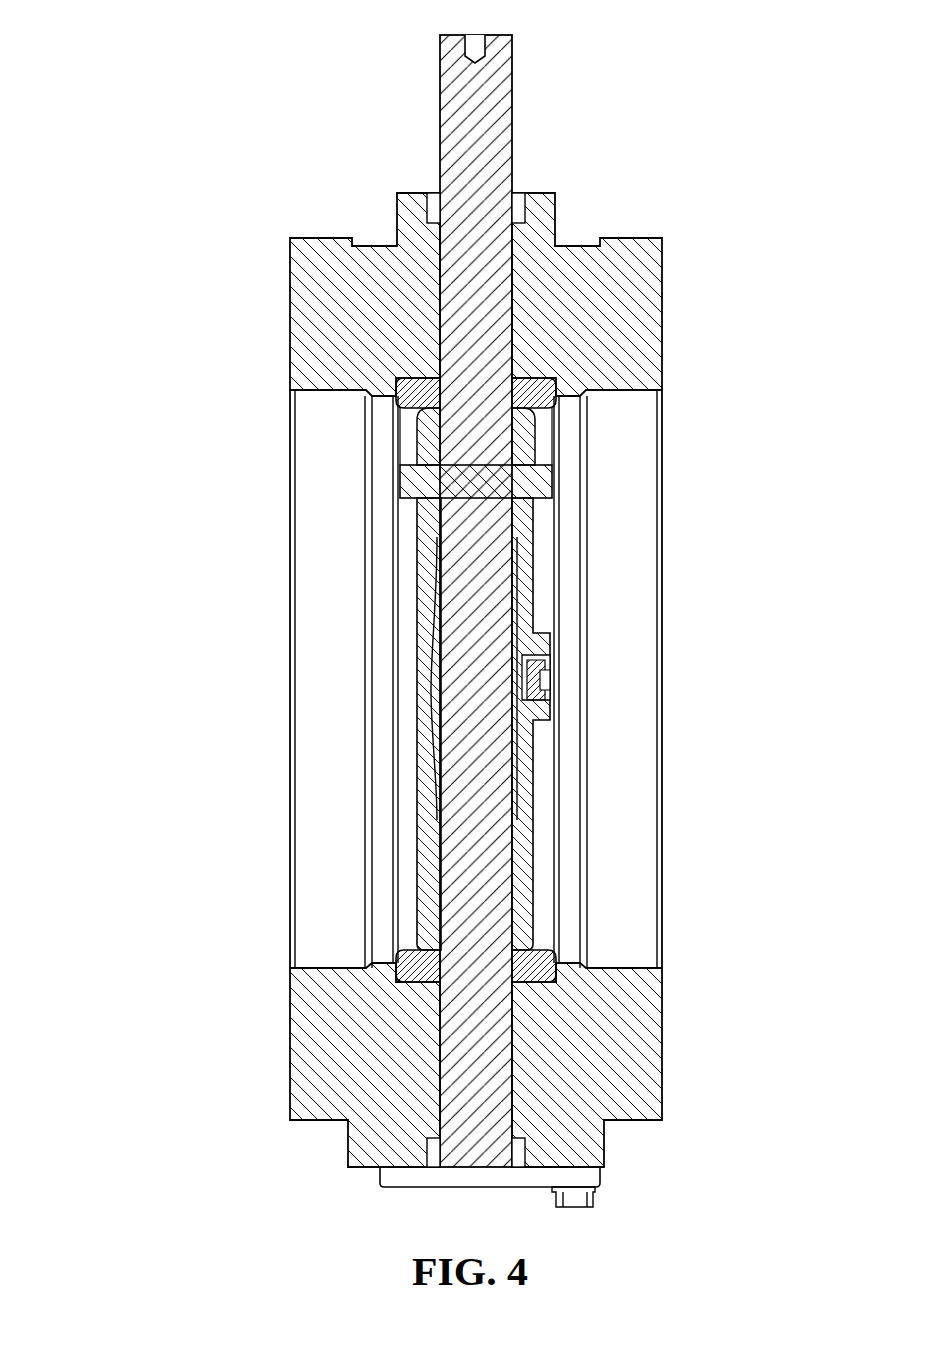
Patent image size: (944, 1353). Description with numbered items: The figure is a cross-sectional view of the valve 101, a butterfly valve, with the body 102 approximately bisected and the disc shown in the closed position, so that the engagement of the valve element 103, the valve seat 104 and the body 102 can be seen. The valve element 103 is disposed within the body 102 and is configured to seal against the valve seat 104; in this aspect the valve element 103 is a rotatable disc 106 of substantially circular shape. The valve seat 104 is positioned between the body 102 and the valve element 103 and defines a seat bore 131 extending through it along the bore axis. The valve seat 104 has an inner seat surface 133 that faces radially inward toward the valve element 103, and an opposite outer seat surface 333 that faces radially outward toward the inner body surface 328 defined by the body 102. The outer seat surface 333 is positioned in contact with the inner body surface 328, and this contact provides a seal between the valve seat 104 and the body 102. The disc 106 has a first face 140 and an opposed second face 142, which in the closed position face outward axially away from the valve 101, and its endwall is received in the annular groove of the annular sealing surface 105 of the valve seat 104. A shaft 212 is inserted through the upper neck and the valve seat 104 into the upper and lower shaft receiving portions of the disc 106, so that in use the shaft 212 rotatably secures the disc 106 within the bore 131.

The valve 101 is at (182, 208).
The shaft 212 is at (487, 91).
The body 102 is at (620, 273).
The inner body surface 328 is at (630, 388).
The seat bore 131 is at (692, 663).
The annular sealing surface 105 is at (403, 408).
The rotatable disc 106 is at (525, 435).
The valve element 103 is at (533, 575).
The first face 140 is at (413, 815).
The second face 142 is at (525, 818).
The inner seat surface 133 is at (417, 950).
The valve seat 104 is at (537, 948).
The outer seat surface 333 is at (550, 983).